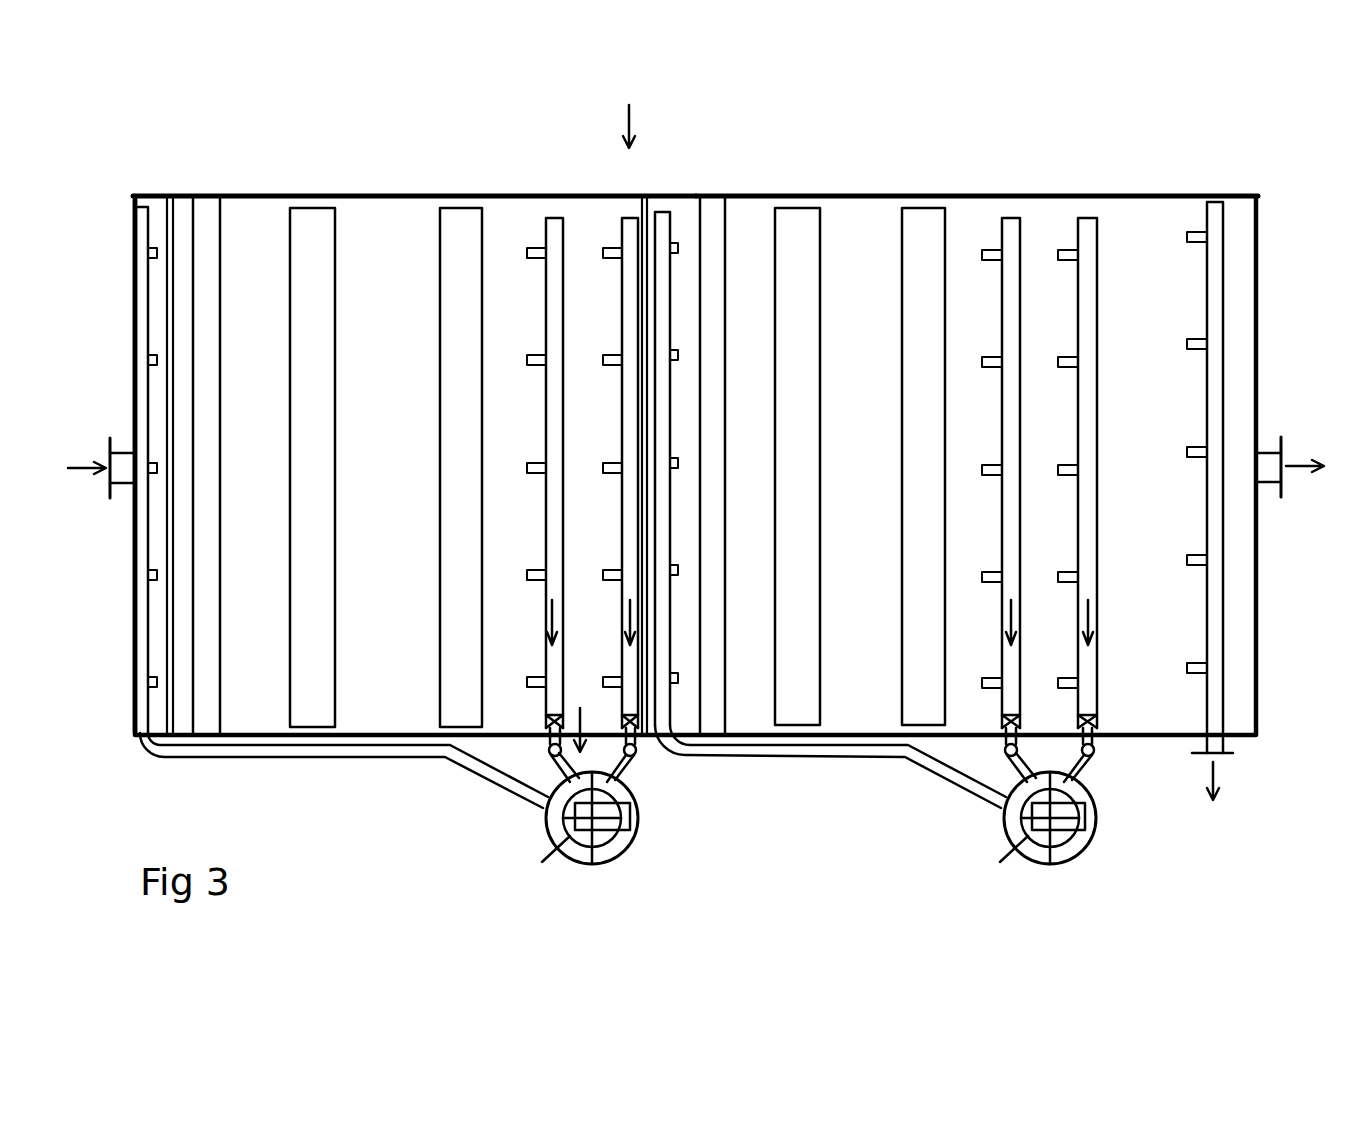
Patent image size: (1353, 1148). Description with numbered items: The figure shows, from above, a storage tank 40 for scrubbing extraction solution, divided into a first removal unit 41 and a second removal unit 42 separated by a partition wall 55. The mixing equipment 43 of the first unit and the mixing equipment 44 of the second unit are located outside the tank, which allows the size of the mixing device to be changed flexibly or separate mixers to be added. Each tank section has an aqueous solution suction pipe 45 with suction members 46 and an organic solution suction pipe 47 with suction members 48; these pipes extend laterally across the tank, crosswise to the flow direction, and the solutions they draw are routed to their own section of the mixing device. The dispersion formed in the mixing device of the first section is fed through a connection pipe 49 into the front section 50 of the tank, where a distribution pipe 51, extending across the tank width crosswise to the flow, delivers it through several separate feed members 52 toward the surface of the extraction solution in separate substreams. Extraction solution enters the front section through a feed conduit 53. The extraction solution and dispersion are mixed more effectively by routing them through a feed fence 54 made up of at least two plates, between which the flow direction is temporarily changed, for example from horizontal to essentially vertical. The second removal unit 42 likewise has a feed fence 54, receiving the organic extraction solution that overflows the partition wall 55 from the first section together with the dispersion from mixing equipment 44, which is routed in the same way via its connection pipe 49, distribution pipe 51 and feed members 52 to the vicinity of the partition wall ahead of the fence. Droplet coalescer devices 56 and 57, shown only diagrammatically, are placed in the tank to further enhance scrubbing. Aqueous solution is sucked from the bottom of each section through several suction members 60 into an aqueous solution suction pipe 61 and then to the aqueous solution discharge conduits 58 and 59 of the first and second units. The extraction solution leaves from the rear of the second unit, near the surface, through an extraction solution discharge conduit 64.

The storage tank 40 is at (643, 122).
The first removal unit 41 is at (385, 196).
The second removal unit 42 is at (980, 210).
The mixing equipment 43 is at (625, 850).
The mixing equipment 44 is at (1085, 845).
The aqueous solution suction pipe 45 is at (635, 775).
The suction members 46 is at (612, 680).
The organic solution suction pipe 47 is at (548, 687).
The suction members 48 is at (532, 678).
The connection pipe 49 is at (262, 752).
The front section 50 is at (133, 622).
The distribution pipe 51 is at (152, 654).
The feed members 52 is at (150, 683).
The feed conduit 53 is at (122, 452).
The feed fence 54 is at (208, 705).
The partition wall 55 is at (645, 216).
The droplet coalescer device 56 is at (325, 648).
The droplet coalescer device 57 is at (450, 632).
The aqueous solution discharge conduit 58 is at (592, 726).
The aqueous solution discharge conduit 59 is at (1222, 745).
The suction members 60 is at (1190, 668).
The aqueous solution suction pipe 61 is at (1207, 620).
The extraction solution discharge conduit 64 is at (1292, 477).